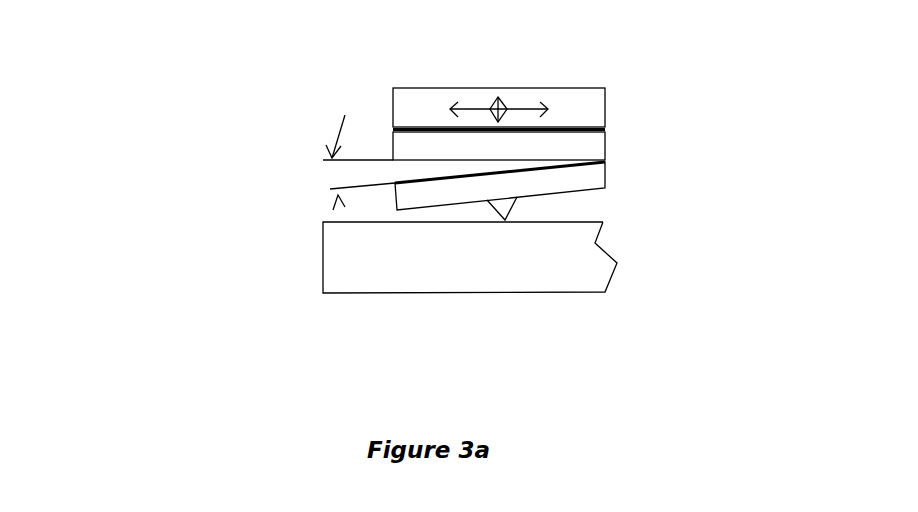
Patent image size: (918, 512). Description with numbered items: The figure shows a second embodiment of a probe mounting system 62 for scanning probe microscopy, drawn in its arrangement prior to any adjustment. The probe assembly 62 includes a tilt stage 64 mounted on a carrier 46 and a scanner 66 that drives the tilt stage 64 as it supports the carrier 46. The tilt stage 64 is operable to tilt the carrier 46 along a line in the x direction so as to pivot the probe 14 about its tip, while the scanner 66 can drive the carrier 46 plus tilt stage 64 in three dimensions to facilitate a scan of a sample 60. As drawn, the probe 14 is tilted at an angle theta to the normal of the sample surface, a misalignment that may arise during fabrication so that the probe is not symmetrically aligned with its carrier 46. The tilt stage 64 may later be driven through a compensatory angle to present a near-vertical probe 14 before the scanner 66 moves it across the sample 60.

The probe mounting system 62 is at (114, 60).
The scanner 66 is at (593, 95).
The tilt stage 64 is at (403, 140).
The carrier 46 is at (605, 170).
The probe 14 is at (497, 208).
The sample 60 is at (600, 280).